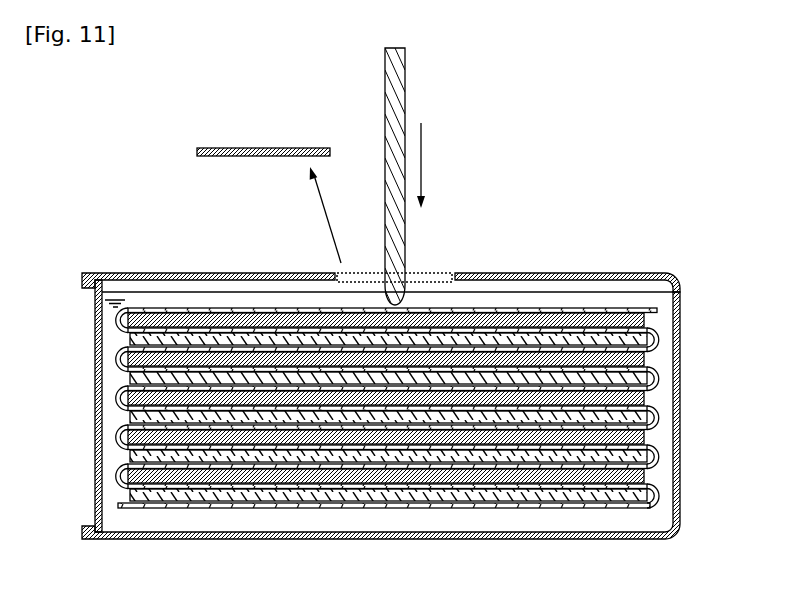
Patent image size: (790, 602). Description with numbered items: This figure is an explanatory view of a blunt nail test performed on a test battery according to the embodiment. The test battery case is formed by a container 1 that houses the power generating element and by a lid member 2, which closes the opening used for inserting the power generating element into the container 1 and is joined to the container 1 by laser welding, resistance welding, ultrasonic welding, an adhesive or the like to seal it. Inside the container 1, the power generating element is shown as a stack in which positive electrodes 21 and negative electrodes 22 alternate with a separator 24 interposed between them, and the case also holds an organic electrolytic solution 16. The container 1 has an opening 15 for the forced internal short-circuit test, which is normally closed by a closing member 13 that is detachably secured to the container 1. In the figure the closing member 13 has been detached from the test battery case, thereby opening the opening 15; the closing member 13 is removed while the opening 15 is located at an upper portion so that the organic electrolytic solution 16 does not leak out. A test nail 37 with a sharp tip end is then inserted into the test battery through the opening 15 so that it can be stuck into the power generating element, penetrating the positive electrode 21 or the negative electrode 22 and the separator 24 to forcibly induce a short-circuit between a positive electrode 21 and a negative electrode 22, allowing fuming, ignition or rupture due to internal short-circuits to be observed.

The container 1 is at (518, 276).
The lid member 2 is at (97, 406).
The closing member 13 is at (240, 151).
The opening 15 is at (338, 276).
The organic electrolytic solution 16 is at (658, 328).
The positive electrode 21 is at (189, 318).
The negative electrode 22 is at (225, 340).
The separator 24 is at (163, 308).
The test nail 37 is at (393, 105).